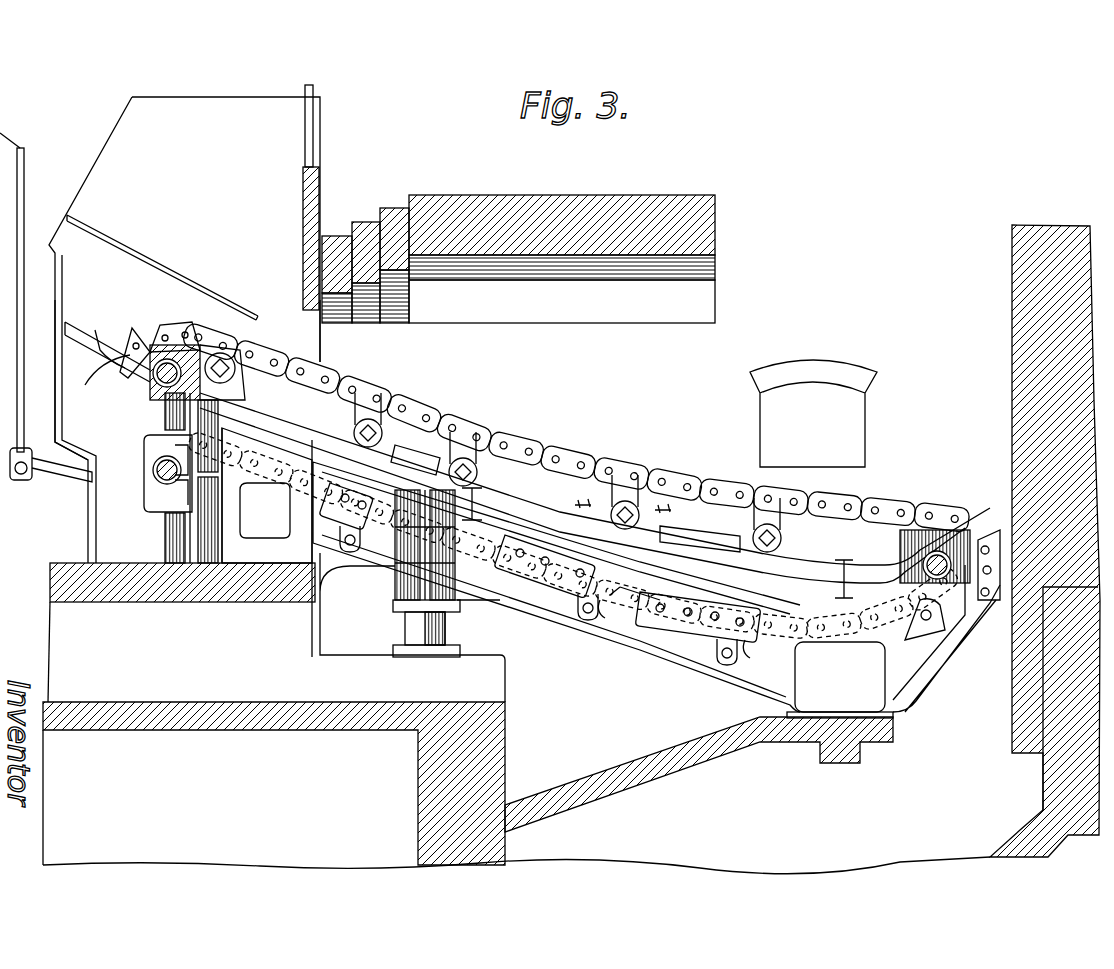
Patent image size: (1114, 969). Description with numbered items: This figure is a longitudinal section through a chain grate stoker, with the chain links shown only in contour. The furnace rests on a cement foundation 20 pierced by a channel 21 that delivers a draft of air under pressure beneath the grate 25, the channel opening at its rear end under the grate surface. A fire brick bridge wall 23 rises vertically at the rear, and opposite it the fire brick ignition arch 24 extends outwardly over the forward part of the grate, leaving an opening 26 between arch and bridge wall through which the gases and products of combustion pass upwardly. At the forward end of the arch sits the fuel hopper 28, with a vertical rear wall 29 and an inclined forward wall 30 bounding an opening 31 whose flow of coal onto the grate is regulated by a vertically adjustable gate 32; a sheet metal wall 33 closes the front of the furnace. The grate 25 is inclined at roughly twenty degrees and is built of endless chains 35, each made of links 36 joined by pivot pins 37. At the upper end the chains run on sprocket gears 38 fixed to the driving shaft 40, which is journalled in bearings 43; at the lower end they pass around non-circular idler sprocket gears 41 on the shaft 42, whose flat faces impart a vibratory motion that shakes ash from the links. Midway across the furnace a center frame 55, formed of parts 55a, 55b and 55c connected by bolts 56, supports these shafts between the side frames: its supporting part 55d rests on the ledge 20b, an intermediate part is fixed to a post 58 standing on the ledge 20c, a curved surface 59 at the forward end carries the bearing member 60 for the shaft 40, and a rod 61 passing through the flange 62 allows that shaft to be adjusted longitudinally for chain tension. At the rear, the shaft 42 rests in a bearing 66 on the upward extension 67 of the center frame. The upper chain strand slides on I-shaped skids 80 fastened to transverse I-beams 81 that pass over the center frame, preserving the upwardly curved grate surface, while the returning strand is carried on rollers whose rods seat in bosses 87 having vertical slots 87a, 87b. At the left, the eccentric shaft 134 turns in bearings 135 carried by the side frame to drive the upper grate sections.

The foundation 20 is at (181, 632).
The ledge 20b is at (895, 733).
The ledge or abutment 20c is at (412, 627).
The channel 21 is at (516, 771).
The bridge wall 23 is at (1012, 306).
The ignition arch 24 is at (716, 216).
The grate 25 is at (562, 303).
The opening 26 is at (813, 360).
The fuel hopper 28 is at (184, 330).
The vertical rear wall 29 is at (322, 118).
The inclined wall 30 is at (143, 252).
The opening 31 is at (266, 305).
The gate 32 is at (303, 181).
The sheet metal wall 33 is at (60, 262).
The chains 35 is at (553, 431).
The links 36 is at (594, 462).
The pivot pins 37 is at (598, 508).
The sprocket gears 38 is at (595, 479).
The transverse shaft 40 is at (140, 395).
The idler sprocket gears 41 is at (905, 535).
The transverse shaft 42 is at (955, 535).
The bearings 43 is at (180, 340).
The center frame 55 is at (542, 620).
The center frame part 55a is at (140, 555).
The center frame part 55b is at (278, 550).
The lower portion of center frame 55c is at (690, 645).
The supporting part 55d is at (872, 676).
The bolts 56 is at (228, 532).
The post 58 is at (405, 628).
The curved surface 59 is at (100, 350).
The bearing member 60 is at (160, 330).
The rod 61 is at (125, 348).
The flange 62 is at (72, 335).
The bearing 66 is at (898, 556).
The upward extension 67 is at (932, 632).
The skids 80 is at (657, 543).
The I-beams 81 is at (302, 434).
The bosses 87 is at (350, 552).
The vertical slots 87a is at (612, 625).
The roller 87b is at (782, 646).
The shaft 134 is at (153, 475).
The bearings 135 is at (176, 492).